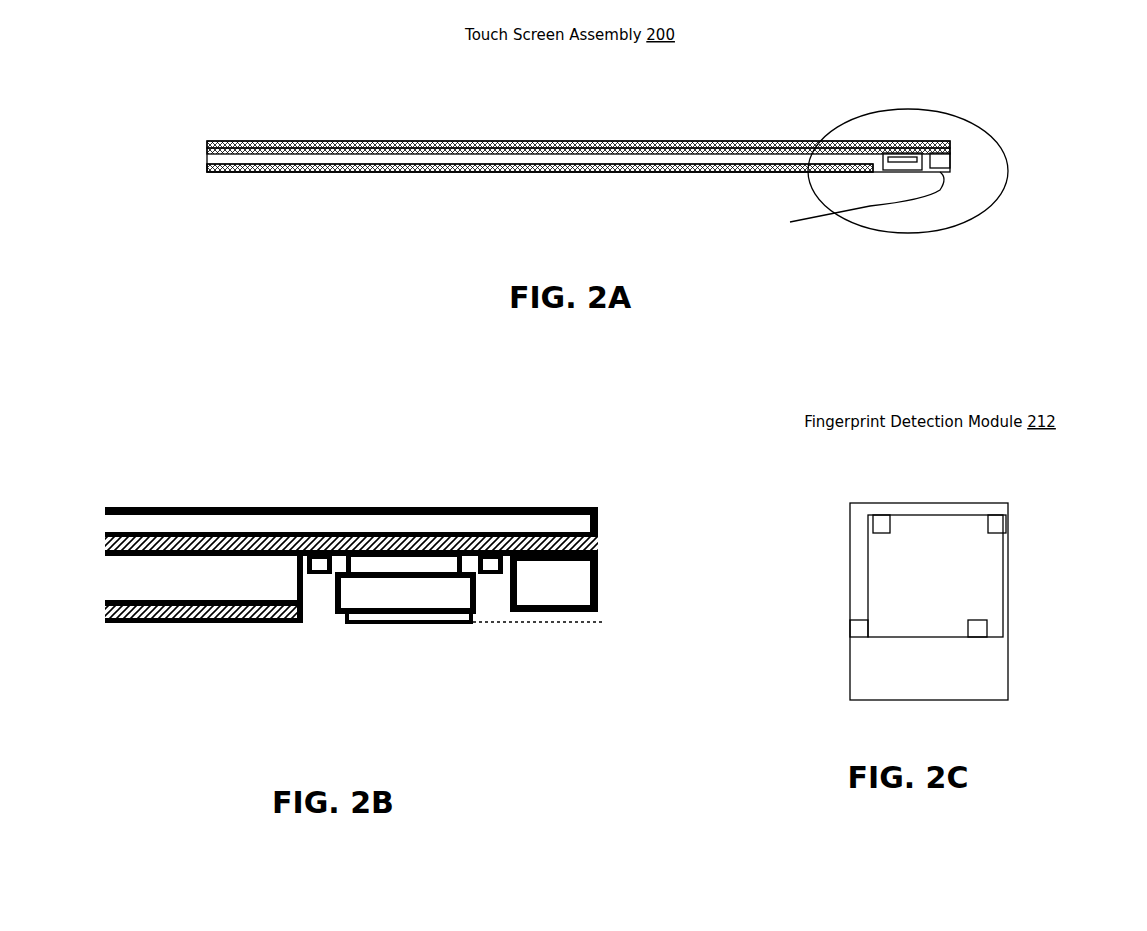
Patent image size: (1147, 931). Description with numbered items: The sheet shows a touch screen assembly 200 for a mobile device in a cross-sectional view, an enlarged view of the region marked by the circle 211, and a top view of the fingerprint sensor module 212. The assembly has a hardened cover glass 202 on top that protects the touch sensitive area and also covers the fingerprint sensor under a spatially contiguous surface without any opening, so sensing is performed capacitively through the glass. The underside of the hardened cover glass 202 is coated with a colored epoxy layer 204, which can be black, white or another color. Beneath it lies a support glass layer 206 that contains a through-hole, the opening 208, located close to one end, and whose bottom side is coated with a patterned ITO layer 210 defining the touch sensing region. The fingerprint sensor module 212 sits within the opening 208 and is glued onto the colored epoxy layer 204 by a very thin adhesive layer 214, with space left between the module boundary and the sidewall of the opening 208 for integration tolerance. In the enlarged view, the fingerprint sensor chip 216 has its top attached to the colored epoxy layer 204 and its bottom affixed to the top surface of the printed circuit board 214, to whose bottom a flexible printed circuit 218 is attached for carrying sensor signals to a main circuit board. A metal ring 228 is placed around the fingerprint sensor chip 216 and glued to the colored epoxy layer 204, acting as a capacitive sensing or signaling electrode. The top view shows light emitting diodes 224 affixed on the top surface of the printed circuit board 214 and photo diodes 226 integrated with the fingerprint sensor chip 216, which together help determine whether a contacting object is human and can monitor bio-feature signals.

In FIG. 2A, the touch screen assembly 200 is at (578, 156).
In FIG. 2A, the hardened cover glass 202 is at (290, 141).
In FIG. 2B, the hardened cover glass 202 is at (120, 507).
In FIG. 2A, the colored epoxy layer 204 is at (207, 148).
In FIG. 2B, the colored epoxy layer 204 is at (205, 507).
In FIG. 2A, the support glass layer 206 is at (795, 157).
In FIG. 2B, the support glass layer 206 is at (165, 625).
In FIG. 2A, the opening 208 is at (877, 172).
In FIG. 2B, the opening 208 is at (315, 578).
In FIG. 2A, the patterned ITO layer 210 is at (363, 170).
In FIG. 2B, the patterned ITO layer 210 is at (108, 625).
In FIG. 2A, the circle 211 is at (945, 112).
In FIG. 2A, the fingerprint sensor module 212 is at (912, 175).
In FIG. 2C, the fingerprint sensor module 212 is at (929, 601).
In FIG. 2B, the adhesive layer / printed circuit board (PCB) 214 is at (365, 685).
In FIG. 2C, the adhesive layer / printed circuit board (PCB) 214 is at (965, 675).
In FIG. 2B, the fingerprint sensor chip 216 is at (410, 565).
In FIG. 2C, the fingerprint sensor chip 216 is at (900, 563).
In FIG. 2B, the flexible printed circuit (FPC) 218 is at (443, 625).
In FIG. 2C, the light emitting diodes (LEDs) 224 is at (762, 632).
In FIG. 2C, the photo diodes 226 is at (1043, 625).
In FIG. 2B, the metal ring 228 is at (318, 578).